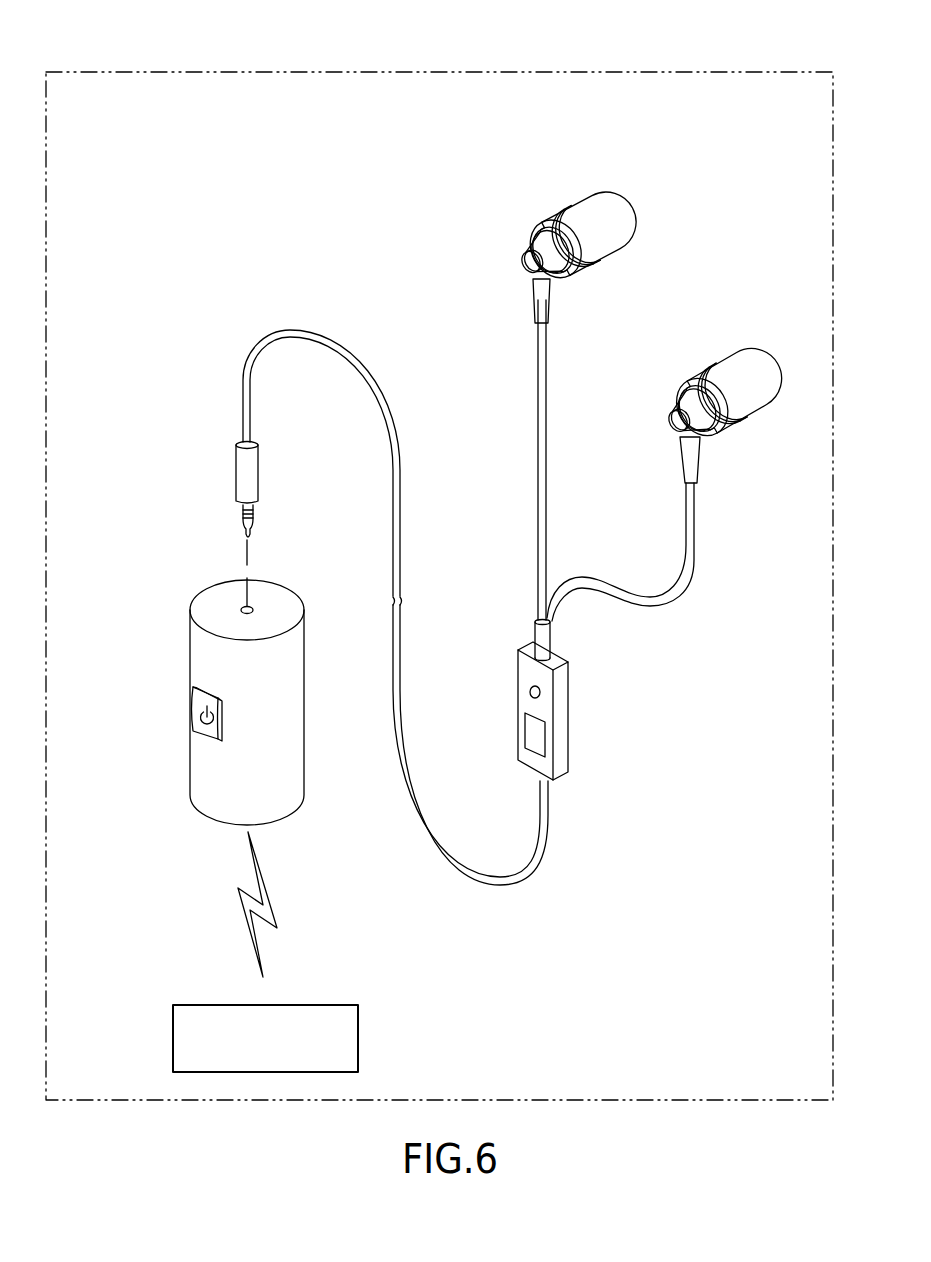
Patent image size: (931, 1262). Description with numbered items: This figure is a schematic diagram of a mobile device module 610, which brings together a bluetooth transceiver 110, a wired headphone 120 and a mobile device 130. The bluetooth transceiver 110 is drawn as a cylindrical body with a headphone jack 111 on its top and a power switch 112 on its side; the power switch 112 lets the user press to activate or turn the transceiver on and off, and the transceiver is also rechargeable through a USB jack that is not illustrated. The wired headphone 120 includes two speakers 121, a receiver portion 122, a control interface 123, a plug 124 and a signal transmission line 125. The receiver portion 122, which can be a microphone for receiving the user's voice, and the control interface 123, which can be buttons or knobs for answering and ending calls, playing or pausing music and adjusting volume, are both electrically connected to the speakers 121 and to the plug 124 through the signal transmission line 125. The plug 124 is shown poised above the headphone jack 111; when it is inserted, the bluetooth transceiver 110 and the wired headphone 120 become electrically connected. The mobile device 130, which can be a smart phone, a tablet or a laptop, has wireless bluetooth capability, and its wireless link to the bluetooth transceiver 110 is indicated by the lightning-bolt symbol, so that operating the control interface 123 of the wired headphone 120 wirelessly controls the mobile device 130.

The mobile device module 610 is at (424, 70).
The bluetooth transceiver 110 is at (178, 640).
The headphone jack 111 is at (252, 607).
The power switch 112 is at (193, 696).
The wired headphone 120 is at (632, 183).
The speaker 121 is at (625, 216).
The receiver portion 122 is at (530, 692).
The control interface 123 is at (535, 742).
The plug 124 is at (240, 468).
The signal transmission line 125 is at (690, 578).
The mobile device 130 is at (171, 1035).